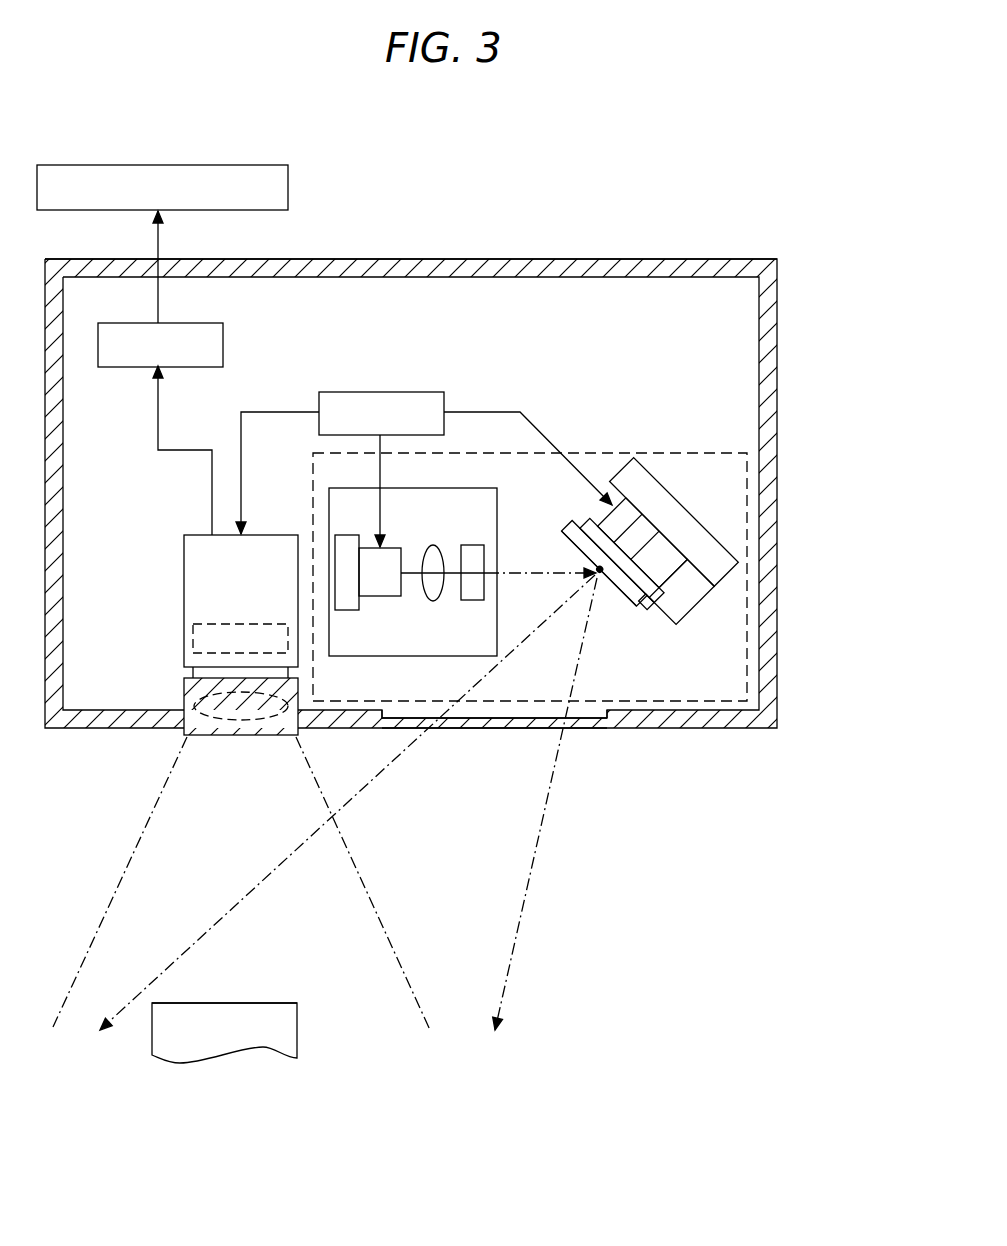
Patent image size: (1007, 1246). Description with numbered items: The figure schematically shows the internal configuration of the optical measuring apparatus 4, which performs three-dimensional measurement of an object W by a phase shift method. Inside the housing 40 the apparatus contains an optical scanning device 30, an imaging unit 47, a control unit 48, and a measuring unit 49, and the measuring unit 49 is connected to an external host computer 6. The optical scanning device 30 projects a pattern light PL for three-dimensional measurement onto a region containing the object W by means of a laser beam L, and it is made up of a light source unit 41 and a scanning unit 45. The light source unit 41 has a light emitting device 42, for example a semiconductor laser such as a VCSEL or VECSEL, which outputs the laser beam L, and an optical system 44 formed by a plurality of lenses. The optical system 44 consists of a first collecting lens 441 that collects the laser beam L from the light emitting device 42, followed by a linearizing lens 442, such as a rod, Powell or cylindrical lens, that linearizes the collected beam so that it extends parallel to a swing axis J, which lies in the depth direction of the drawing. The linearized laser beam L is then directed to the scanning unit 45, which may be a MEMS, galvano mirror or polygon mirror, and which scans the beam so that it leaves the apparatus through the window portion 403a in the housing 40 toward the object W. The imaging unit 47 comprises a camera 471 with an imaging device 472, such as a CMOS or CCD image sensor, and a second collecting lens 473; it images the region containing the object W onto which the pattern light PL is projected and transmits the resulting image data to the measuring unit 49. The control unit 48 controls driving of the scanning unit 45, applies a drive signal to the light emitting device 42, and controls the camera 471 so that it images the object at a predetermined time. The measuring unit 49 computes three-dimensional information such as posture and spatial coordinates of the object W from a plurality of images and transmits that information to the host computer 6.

The optical measuring apparatus 4 is at (719, 231).
The host computer 6 is at (288, 190).
The optical scanning device 30 is at (688, 705).
The housing 40 is at (763, 566).
The window portion 403a is at (586, 729).
The light source unit 41 is at (413, 556).
The light emitting device 42 is at (377, 597).
The optical system 44 is at (446, 574).
The first collecting lens 441 is at (428, 546).
The linearizing lens 442 is at (472, 545).
The scanning unit 45 is at (432, 515).
The imaging unit 47 is at (194, 550).
The camera 471 is at (207, 563).
The imaging device 472 is at (197, 641).
The second collecting lens 473 is at (205, 707).
The control unit 48 is at (381, 392).
The measuring unit 49 is at (223, 347).
The laser beam L is at (523, 578).
The swing axis J is at (582, 562).
The pattern light PL is at (255, 996).
The object W is at (285, 1023).